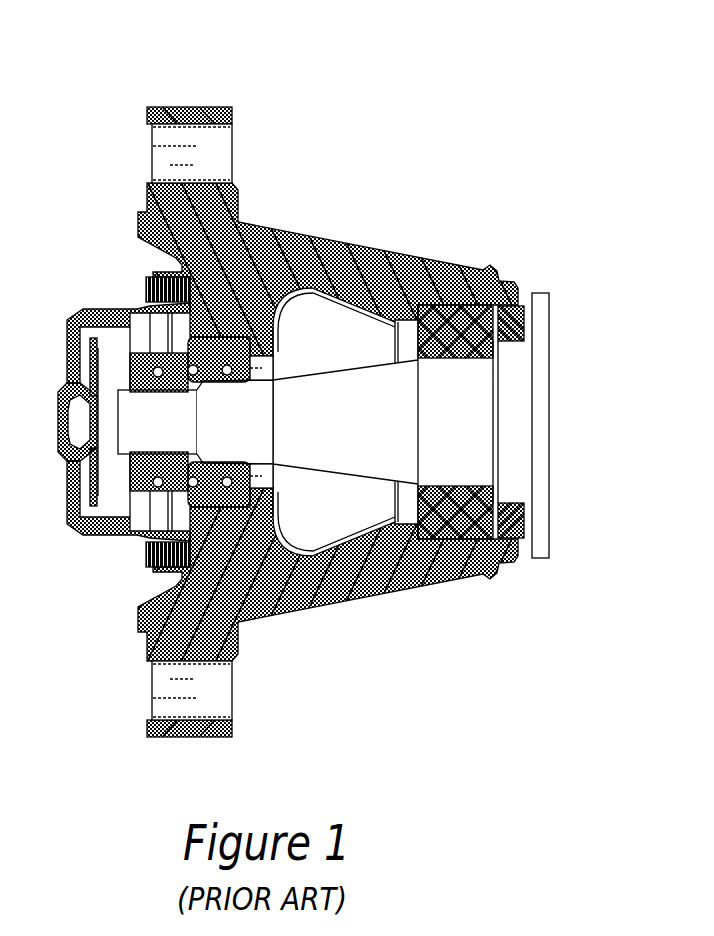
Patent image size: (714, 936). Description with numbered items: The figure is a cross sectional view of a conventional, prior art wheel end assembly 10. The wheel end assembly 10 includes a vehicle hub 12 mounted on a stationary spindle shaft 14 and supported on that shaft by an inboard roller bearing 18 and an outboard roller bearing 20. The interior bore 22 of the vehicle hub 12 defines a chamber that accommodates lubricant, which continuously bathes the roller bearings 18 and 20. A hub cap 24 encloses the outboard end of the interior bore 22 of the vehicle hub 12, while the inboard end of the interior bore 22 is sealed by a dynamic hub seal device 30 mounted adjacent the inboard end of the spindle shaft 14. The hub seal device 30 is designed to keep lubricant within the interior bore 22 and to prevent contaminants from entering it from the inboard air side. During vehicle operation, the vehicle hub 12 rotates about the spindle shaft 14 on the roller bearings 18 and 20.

The wheel end assembly 10 is at (325, 376).
The vehicle hub 12 is at (313, 242).
The spindle shaft 14 is at (343, 408).
The inboard roller bearing 18 is at (483, 271).
The outboard roller bearing 20 is at (222, 340).
The interior bore 22 is at (353, 533).
The hub cap 24 is at (88, 540).
The dynamic hub seal device 30 is at (524, 332).